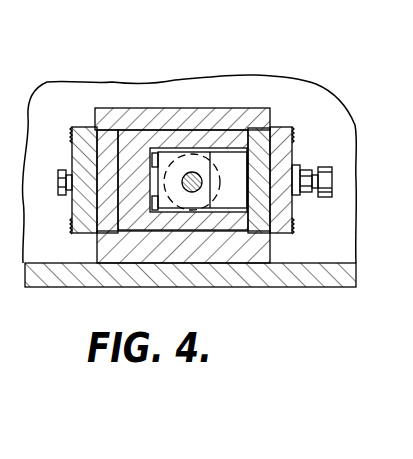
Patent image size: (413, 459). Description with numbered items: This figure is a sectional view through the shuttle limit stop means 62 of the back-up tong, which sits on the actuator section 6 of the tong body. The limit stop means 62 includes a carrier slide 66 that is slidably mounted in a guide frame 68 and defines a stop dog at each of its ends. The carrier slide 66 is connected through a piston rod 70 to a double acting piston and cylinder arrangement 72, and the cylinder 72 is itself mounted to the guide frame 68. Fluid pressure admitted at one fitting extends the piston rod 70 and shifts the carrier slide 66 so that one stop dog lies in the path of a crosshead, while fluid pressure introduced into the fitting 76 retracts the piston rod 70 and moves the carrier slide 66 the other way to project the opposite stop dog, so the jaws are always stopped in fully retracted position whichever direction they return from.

The actuator section 6 is at (306, 290).
The shuttle limit stop means 62 is at (278, 101).
The carrier slide 66 is at (138, 212).
The guide frame 68 is at (110, 117).
The piston rod 70 is at (193, 174).
The double acting piston and cylinder arrangement 72 is at (222, 170).
The fitting 76 is at (332, 178).